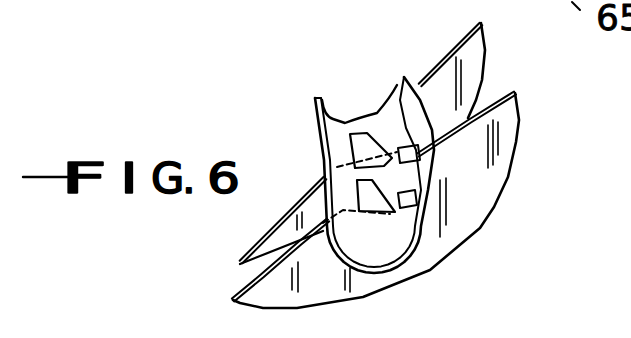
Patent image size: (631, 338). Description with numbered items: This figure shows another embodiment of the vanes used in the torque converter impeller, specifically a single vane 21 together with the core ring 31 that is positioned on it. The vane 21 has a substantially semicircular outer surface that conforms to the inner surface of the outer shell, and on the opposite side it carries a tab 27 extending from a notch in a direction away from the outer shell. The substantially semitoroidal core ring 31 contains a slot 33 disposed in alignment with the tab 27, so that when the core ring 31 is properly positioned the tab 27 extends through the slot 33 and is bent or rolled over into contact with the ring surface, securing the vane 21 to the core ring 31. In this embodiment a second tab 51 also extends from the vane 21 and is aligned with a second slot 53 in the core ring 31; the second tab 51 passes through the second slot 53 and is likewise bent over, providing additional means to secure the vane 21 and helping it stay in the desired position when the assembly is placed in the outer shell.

The vane 21 is at (480, 180).
The second tab 51 is at (467, 85).
The core ring 31 is at (315, 103).
The tab 27 is at (367, 118).
The second slot 53 is at (397, 85).
The slot 33 is at (330, 168).